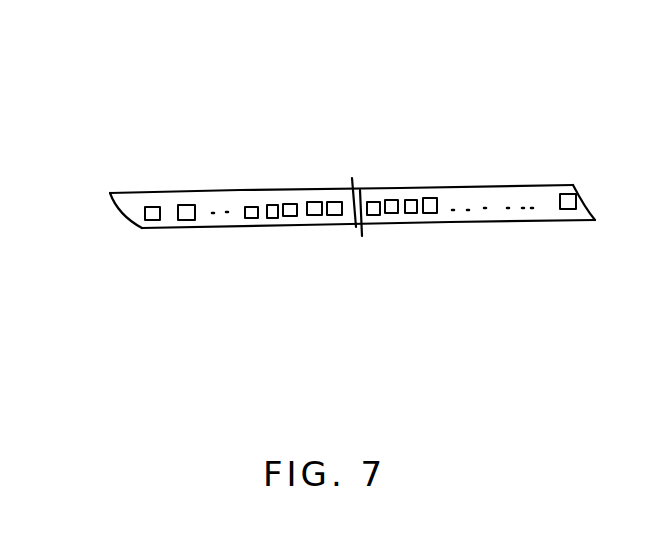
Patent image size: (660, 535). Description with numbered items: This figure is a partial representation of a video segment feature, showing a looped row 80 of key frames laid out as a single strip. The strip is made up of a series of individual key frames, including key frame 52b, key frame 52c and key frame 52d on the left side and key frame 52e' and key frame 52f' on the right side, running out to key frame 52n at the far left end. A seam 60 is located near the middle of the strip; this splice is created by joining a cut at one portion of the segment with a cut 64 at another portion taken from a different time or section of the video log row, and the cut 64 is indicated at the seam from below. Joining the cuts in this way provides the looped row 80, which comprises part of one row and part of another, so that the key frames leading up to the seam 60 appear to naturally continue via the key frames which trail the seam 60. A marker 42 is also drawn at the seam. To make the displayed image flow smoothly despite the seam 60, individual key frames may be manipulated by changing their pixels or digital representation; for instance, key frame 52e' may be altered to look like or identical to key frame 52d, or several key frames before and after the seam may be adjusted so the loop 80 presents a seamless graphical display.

The looped row 80 is at (113, 73).
The seam 60 is at (347, 103).
The cut line / separation 42 is at (355, 166).
The cut 64 is at (362, 240).
The key frame 52n is at (140, 207).
The key frame 52b is at (287, 202).
The key frame 52c is at (313, 202).
The key frame 52d is at (332, 202).
The key frame 52e' is at (398, 169).
The key frame 52f' is at (436, 168).